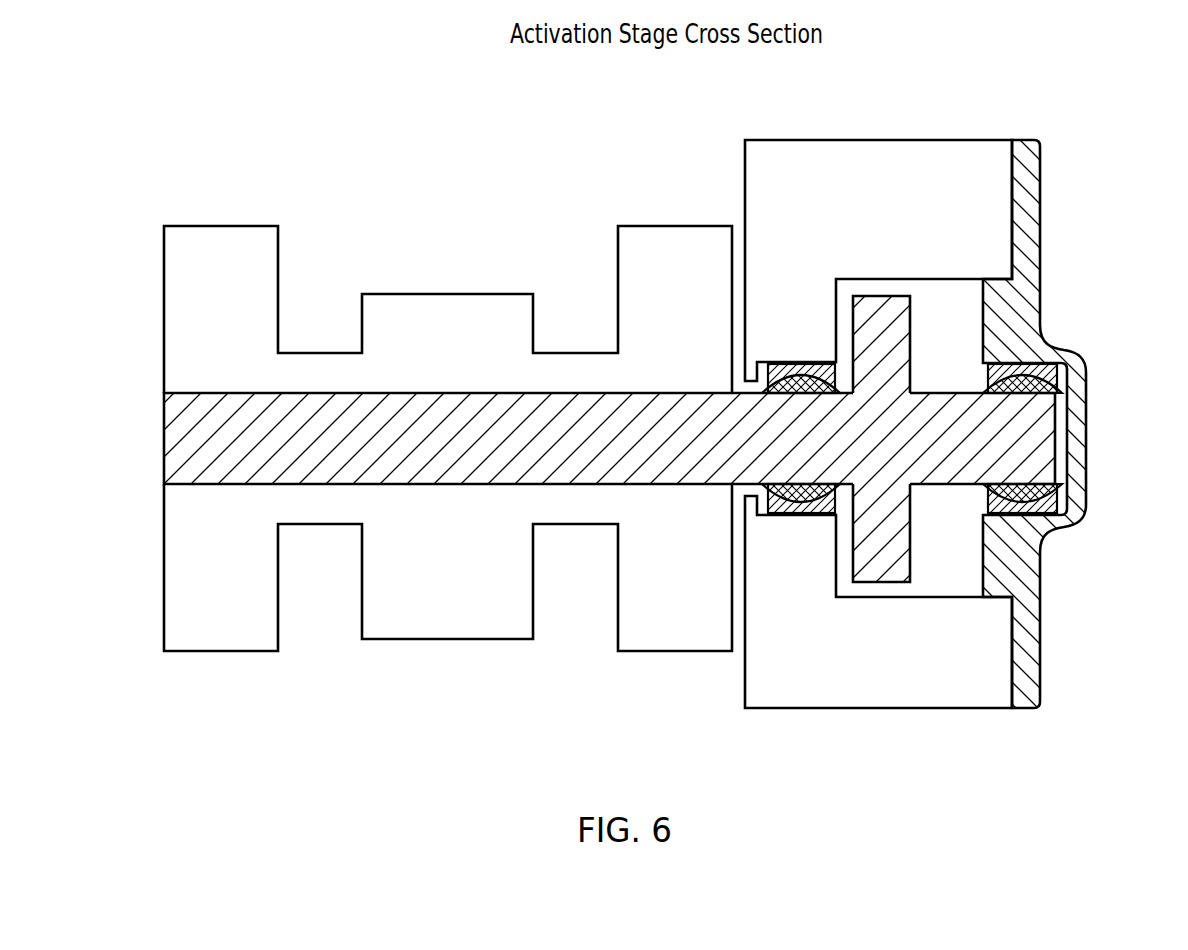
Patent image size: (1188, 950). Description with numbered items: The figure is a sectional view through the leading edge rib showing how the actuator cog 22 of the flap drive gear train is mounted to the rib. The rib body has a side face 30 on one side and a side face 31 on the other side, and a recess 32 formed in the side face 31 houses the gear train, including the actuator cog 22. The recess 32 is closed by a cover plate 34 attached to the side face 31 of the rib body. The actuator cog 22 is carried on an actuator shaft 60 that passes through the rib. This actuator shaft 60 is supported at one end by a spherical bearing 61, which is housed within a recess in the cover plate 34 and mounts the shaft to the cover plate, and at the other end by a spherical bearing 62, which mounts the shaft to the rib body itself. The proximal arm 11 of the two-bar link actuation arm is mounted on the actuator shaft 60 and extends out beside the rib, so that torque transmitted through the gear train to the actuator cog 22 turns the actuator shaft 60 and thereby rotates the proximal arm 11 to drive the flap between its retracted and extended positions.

The proximal arm 11 is at (450, 600).
The actuator cog 22 is at (882, 582).
The side face 30 is at (745, 187).
The side face 31 is at (1013, 212).
The recess 32 is at (963, 347).
The cover plate 34 is at (1040, 268).
The actuator shaft 60 is at (497, 432).
The spherical bearing 61 is at (1068, 522).
The spherical bearing 62 is at (782, 362).